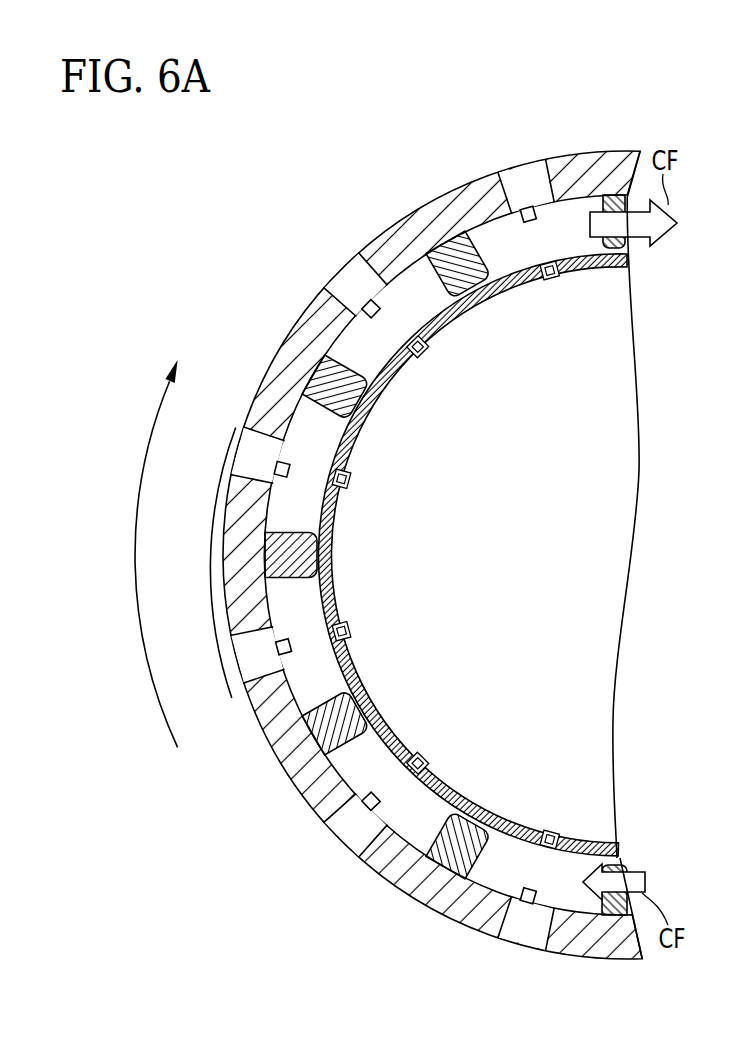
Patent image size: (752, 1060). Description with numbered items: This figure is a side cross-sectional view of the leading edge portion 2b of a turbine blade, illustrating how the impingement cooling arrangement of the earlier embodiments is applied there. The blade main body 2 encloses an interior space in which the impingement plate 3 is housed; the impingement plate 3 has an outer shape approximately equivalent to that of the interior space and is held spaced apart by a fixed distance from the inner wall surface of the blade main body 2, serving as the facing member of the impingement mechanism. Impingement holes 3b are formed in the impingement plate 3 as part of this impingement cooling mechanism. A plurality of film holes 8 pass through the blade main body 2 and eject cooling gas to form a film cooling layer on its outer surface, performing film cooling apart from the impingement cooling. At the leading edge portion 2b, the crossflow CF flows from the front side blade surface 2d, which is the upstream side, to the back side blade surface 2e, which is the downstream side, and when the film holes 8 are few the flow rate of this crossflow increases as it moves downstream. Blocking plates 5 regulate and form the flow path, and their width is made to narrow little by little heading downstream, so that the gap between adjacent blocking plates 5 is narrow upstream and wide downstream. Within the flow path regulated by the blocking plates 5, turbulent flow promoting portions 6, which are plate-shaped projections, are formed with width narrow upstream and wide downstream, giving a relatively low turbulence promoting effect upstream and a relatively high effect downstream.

The blade main body 2 is at (393, 904).
The leading edge portion 2b is at (211, 614).
The front side blade surface 2d is at (634, 968).
The back side blade surface 2e is at (566, 142).
The impingement plate 3 is at (350, 439).
The impingement hole 3b is at (416, 344).
The blocking plate 5 is at (440, 264).
The turbulent flow promoting portion 6 is at (374, 306).
The film hole 8 is at (542, 187).